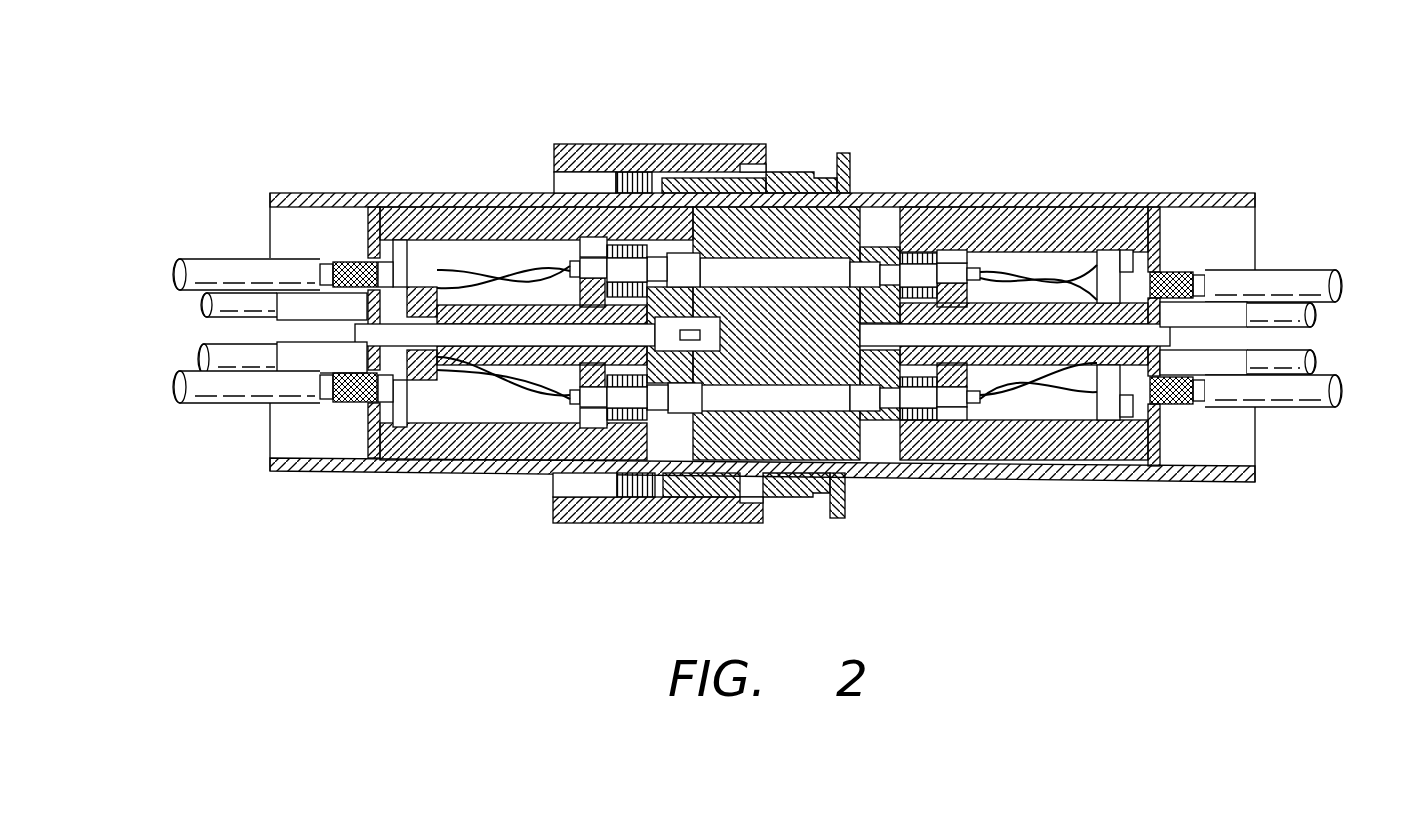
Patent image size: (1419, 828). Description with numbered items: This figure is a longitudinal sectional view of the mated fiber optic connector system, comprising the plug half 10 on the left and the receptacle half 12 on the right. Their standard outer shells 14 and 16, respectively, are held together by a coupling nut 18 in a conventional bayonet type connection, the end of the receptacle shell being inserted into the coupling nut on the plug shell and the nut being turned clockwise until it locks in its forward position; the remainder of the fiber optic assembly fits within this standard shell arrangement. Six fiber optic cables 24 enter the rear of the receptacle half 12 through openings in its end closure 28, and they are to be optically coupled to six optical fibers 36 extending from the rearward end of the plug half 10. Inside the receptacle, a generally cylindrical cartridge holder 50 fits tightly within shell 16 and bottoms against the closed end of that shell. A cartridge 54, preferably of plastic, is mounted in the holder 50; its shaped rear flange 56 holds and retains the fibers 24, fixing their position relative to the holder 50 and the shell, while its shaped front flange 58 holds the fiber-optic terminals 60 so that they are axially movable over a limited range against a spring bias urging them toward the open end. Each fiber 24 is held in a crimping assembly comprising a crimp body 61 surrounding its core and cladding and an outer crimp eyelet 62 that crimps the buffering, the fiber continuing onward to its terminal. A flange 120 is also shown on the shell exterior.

The plug half 10 is at (472, 178).
The receptacle half 12 is at (1095, 178).
The outer shell 14 is at (372, 472).
The outer shell 16 is at (1205, 483).
The coupling nut 18 is at (700, 525).
The fiber optic cables 24 is at (1317, 270).
The end closure 28 is at (1160, 430).
The optical fibers 36 is at (175, 288).
The cartridge holder 50 is at (985, 213).
The cartridge 54 is at (1030, 363).
The rear flange 56 is at (1177, 337).
The front flange 58 is at (985, 402).
The fiber-optic terminals 60 is at (795, 412).
The crimp body 61 is at (1183, 268).
The outer crimp eyelet 62 is at (303, 257).
The flange 120 is at (838, 157).